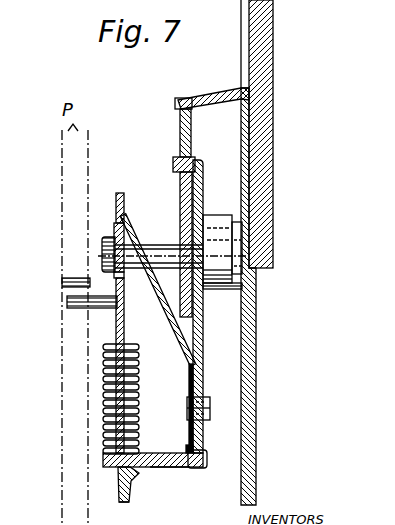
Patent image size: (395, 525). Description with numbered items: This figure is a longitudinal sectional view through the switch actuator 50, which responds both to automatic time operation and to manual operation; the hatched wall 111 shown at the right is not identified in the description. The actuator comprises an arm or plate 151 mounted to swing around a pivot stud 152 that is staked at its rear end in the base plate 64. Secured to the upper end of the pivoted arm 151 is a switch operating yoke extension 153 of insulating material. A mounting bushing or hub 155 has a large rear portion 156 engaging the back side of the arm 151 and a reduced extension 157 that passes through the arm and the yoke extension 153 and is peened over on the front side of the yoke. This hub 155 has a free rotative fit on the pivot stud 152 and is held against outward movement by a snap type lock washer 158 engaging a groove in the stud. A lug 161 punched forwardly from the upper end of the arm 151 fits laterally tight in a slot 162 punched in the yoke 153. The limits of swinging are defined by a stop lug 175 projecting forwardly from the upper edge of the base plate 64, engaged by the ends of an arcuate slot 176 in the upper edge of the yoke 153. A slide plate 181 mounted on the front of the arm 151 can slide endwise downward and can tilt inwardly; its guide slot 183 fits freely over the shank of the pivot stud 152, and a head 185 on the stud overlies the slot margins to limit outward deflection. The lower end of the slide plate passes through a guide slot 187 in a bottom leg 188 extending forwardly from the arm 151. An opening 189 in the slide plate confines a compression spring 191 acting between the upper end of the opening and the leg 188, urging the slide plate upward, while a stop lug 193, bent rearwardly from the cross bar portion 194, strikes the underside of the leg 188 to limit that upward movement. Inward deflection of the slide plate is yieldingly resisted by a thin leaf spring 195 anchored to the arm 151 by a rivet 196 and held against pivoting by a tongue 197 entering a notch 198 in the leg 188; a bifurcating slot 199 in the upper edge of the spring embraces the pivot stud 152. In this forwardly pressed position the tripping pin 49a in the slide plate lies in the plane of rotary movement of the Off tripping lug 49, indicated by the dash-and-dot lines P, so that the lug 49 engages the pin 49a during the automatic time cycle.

The switch actuator 50 is at (119, 146).
The wall 111 is at (272, 29).
The base plate 64 is at (253, 293).
The stop lug 175 is at (204, 96).
The arcuate slot 176 is at (178, 99).
The switch operating yoke extension 153 is at (192, 123).
The slot 162 is at (175, 158).
The lug 161 is at (173, 166).
The arm or plate 151 is at (199, 345).
The mounting bushing or hub 155 is at (228, 202).
The large rear portion 156 is at (216, 228).
The reduced extension 157 is at (208, 290).
The pivot stud 152 is at (156, 243).
The slide plate 181 is at (115, 194).
The guide slot 183 is at (113, 228).
The head 185 is at (104, 243).
The bifurcating slot 199 is at (117, 274).
The Off tripping lug 49 is at (61, 282).
The tripping pin 49a is at (66, 303).
The lock washer 158 is at (158, 285).
The leaf spring 195 is at (181, 346).
The rivet 196 is at (211, 405).
The notch 198 is at (188, 452).
The tongue 197 is at (208, 457).
The guide slot 187 is at (103, 463).
The bottom leg 188 is at (171, 469).
The stop lug 193 is at (134, 482).
The cross bar portion 194 is at (122, 505).
The opening 189 is at (117, 335).
The compression spring 191 is at (103, 378).